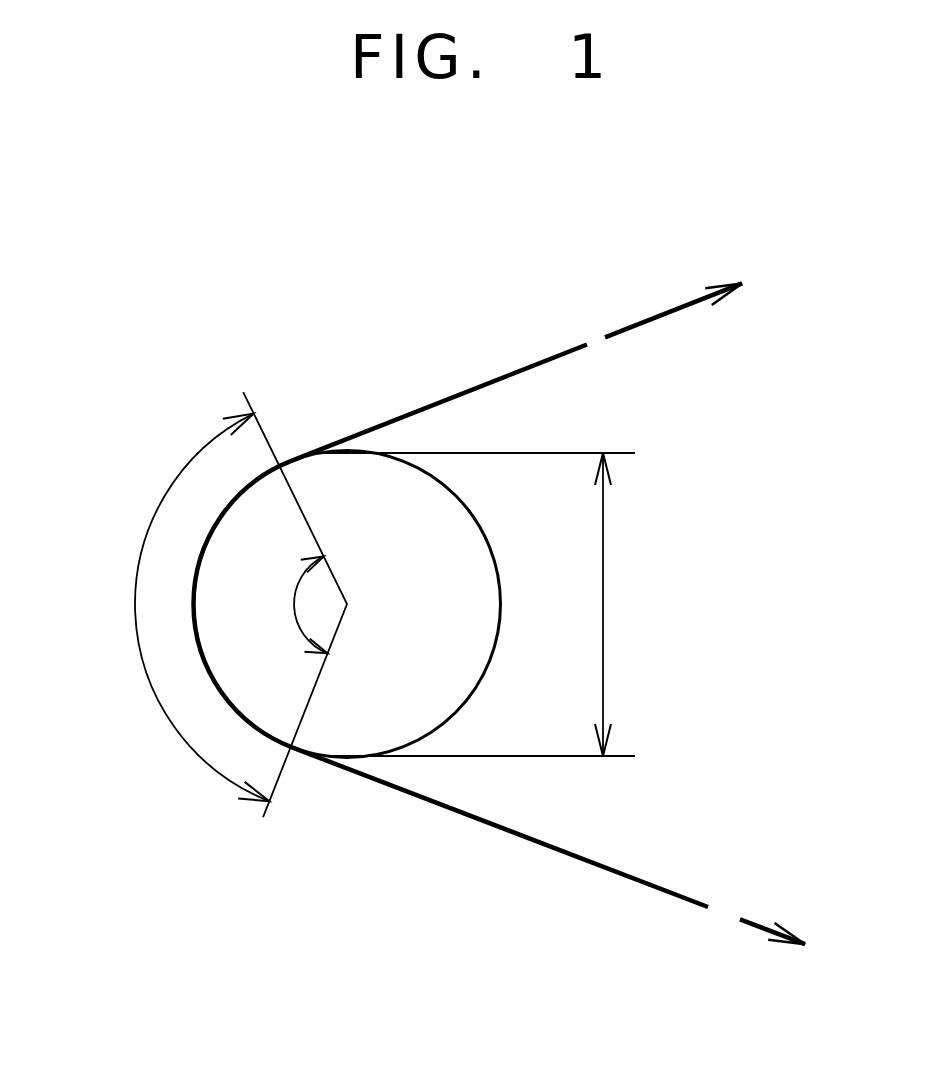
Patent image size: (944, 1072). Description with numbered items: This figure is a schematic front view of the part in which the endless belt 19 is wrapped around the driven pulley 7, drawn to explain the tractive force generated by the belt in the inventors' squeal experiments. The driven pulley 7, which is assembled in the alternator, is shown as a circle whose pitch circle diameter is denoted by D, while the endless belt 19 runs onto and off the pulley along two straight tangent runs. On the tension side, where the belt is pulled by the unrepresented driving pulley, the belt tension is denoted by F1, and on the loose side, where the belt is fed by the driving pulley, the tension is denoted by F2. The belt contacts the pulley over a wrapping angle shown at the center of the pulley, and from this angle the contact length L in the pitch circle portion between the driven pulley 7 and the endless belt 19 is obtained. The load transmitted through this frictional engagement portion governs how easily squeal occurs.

The driven pulley 7 is at (368, 715).
The endless belt 19 is at (630, 875).
The tension on the tension side F1 is at (650, 318).
The tension on the loose side F2 is at (757, 924).
The diameter of the pitch circle of the driven pulley D is at (484, 604).
The contact length L is at (135, 592).